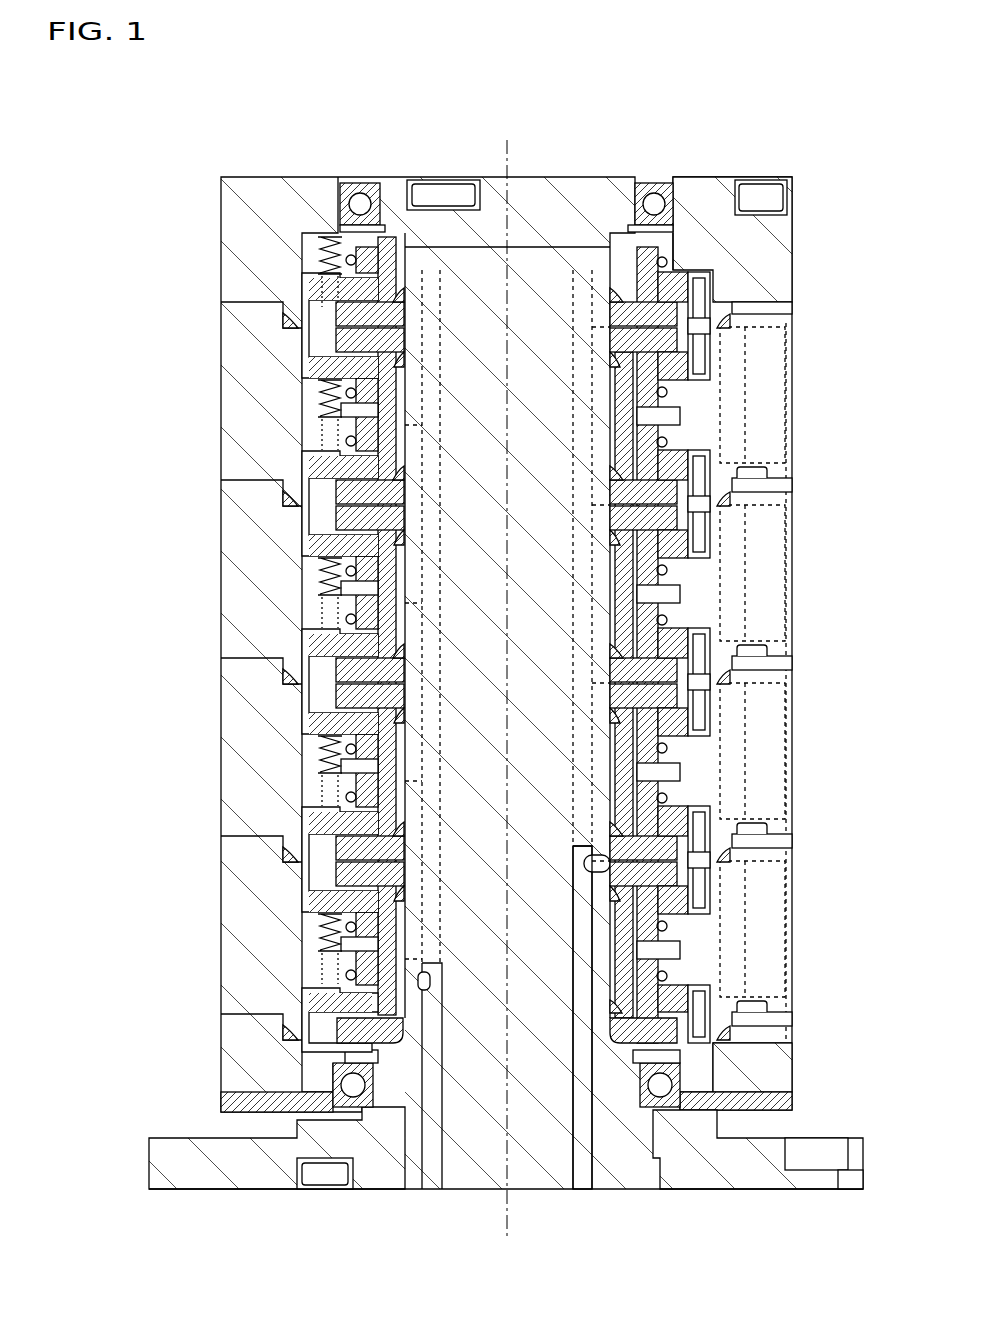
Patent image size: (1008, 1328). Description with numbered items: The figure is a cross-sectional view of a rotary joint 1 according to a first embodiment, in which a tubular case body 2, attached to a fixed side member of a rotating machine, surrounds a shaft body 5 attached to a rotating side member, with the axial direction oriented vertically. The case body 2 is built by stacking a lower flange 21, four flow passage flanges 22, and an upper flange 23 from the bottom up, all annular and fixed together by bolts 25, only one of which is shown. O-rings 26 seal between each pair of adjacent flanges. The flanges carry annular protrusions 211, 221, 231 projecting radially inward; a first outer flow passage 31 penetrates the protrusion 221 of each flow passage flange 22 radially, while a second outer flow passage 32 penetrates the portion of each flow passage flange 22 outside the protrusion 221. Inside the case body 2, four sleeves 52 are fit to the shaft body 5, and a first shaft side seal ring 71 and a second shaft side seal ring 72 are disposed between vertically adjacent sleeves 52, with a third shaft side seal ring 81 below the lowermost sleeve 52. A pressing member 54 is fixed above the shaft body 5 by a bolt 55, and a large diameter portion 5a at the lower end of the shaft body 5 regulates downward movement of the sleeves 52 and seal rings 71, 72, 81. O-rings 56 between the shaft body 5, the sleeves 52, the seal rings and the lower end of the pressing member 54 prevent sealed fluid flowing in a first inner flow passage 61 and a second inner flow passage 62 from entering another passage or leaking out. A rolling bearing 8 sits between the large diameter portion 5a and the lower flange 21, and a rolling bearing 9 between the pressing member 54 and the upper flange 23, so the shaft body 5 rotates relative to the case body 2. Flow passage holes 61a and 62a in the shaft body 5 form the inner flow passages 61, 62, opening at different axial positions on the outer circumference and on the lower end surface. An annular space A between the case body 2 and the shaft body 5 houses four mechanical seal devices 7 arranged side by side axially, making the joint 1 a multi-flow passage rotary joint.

The rotary joint 1 is at (830, 176).
The case body 2 is at (797, 240).
The shaft body 5 is at (455, 1191).
The large diameter portion 5a is at (628, 1176).
The mechanical seal device 7 is at (325, 347).
The rolling bearing 8 is at (378, 1100).
The rolling bearing 9 is at (358, 183).
The lower flange 21 is at (780, 1080).
The flow passage flange 22 is at (690, 392).
The upper flange 23 is at (757, 256).
The bolt 25 is at (767, 195).
The O-ring 26 is at (732, 320).
The first outer flow passage 31 is at (790, 475).
The second outer flow passage 32 is at (790, 370).
The sleeve 52 is at (392, 392).
The pressing member 54 is at (571, 195).
The bolt 55 is at (455, 195).
The O-ring 56 is at (598, 300).
The first inner flow passage 61 is at (496, 731).
The flow passage hole 61a is at (442, 432).
The second inner flow passage 62 is at (512, 619).
The flow passage hole 62a is at (588, 327).
The first shaft side seal ring 71 is at (400, 312).
The second shaft side seal ring 72 is at (400, 340).
The third shaft side seal ring 81 is at (402, 1028).
The annular protrusion 211 is at (697, 1082).
The annular protrusion 221 is at (735, 407).
The annular protrusion 231 is at (695, 245).
The annular space A is at (685, 327).